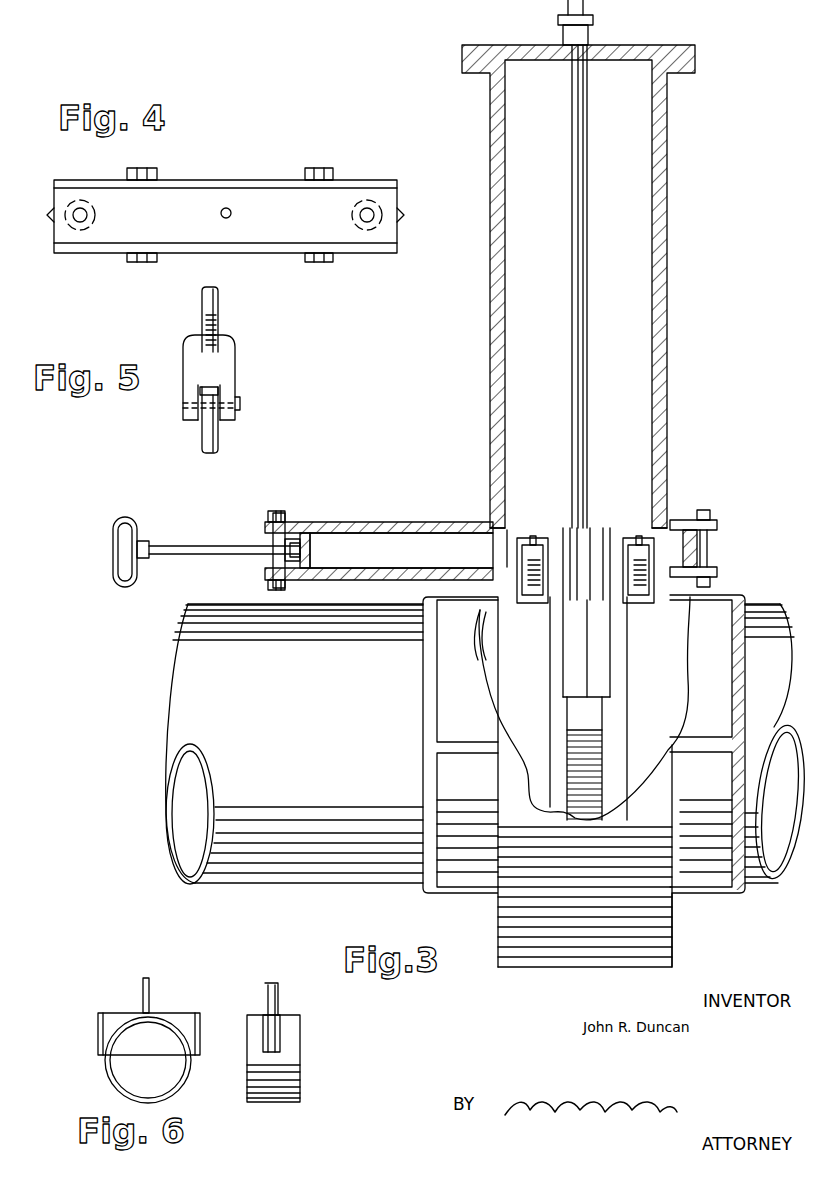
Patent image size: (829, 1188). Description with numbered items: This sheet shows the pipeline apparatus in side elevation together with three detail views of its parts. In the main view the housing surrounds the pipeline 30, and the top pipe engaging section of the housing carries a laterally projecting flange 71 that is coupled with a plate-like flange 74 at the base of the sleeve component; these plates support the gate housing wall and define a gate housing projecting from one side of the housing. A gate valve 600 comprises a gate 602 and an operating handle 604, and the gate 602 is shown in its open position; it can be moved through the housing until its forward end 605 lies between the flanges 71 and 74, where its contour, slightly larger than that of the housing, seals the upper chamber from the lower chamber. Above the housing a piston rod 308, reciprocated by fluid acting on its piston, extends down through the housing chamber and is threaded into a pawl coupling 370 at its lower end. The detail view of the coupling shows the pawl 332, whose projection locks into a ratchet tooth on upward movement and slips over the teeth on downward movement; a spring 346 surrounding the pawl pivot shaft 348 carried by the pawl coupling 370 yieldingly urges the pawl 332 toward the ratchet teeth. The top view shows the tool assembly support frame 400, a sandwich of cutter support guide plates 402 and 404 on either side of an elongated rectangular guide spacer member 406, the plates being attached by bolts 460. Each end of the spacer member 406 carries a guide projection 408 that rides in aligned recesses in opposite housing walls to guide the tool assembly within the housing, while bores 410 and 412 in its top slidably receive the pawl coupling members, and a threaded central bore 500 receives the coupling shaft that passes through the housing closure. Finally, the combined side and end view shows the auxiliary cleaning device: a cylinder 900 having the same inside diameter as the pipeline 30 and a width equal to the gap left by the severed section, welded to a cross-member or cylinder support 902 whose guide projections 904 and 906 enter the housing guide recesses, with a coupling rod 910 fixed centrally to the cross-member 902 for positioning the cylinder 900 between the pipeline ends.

In FIG. 3, the pipeline 30 is at (298, 885).
In FIG. 3, the flange 71 is at (717, 572).
In FIG. 3, the flange 74 is at (677, 522).
In FIG. 3, the gate valve 600 is at (373, 553).
In FIG. 3, the gate 602 is at (447, 550).
In FIG. 3, the operating handle 604 is at (182, 548).
In FIG. 3, the forward end of gate 605 is at (510, 540).
In FIG. 4, the tool assembly support frame 400 is at (232, 204).
In FIG. 4, the cutter support guide plate 402 is at (360, 180).
In FIG. 4, the cutter support guide plate 404 is at (257, 248).
In FIG. 4, the guide spacer member 406 is at (290, 215).
In FIG. 4, the guide projection 408 is at (53, 215).
In FIG. 4, the bore 410 is at (87, 208).
In FIG. 4, the bore 412 is at (373, 212).
In FIG. 4, the bolt 460 is at (143, 168).
In FIG. 4, the central bore 500 is at (227, 208).
In FIG. 5, the piston rod 308 is at (217, 310).
In FIG. 5, the pawl 332 is at (213, 432).
In FIG. 5, the spring 346 is at (217, 390).
In FIG. 5, the pawl pivot shaft 348 is at (233, 395).
In FIG. 5, the pawl coupling 370 is at (227, 367).
In FIG. 6, the cylinder 900 is at (173, 1088).
In FIG. 6, the cylinder support 902 is at (147, 1027).
In FIG. 6, the guide projection 904 is at (102, 1043).
In FIG. 6, the guide projection 906 is at (200, 1040).
In FIG. 6, the coupling rod 910 is at (148, 990).